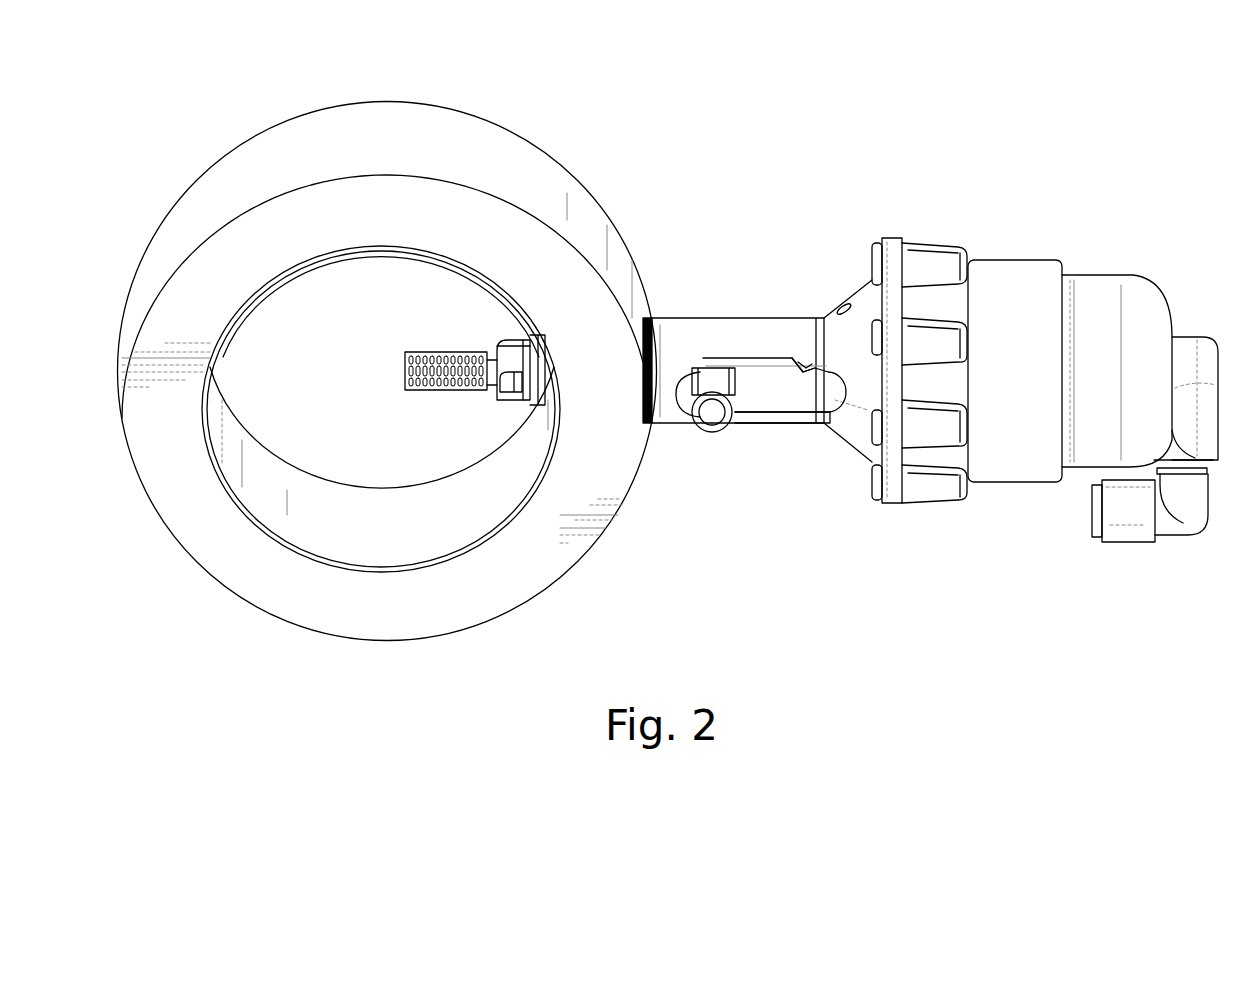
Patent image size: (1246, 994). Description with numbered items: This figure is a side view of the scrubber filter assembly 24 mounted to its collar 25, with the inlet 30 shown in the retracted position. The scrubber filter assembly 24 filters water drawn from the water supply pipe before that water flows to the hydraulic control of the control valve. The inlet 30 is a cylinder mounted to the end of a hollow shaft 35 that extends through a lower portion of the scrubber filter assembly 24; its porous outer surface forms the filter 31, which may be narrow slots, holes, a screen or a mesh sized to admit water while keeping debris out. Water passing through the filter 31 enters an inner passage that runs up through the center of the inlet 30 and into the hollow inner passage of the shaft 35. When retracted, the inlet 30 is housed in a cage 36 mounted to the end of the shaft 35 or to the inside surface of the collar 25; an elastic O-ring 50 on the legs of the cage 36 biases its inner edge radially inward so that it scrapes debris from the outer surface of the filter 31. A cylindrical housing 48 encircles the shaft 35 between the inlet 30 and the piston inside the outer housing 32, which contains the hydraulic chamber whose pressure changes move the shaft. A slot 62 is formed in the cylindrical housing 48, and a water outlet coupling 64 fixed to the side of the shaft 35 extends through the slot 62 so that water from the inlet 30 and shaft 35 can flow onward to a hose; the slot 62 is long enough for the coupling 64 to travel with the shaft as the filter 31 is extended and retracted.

The scrubber filter assembly 24 is at (668, 333).
The collar 25 is at (527, 605).
The inlet 30 is at (421, 361).
The filter 31 is at (403, 370).
The outer housing 32 is at (1015, 470).
The hollow shaft 35 is at (761, 388).
The cage 36 is at (505, 400).
The cylindrical housing 48 is at (722, 323).
The O-ring 50 is at (532, 360).
The slot 62 is at (797, 375).
The water outlet coupling 64 is at (718, 420).